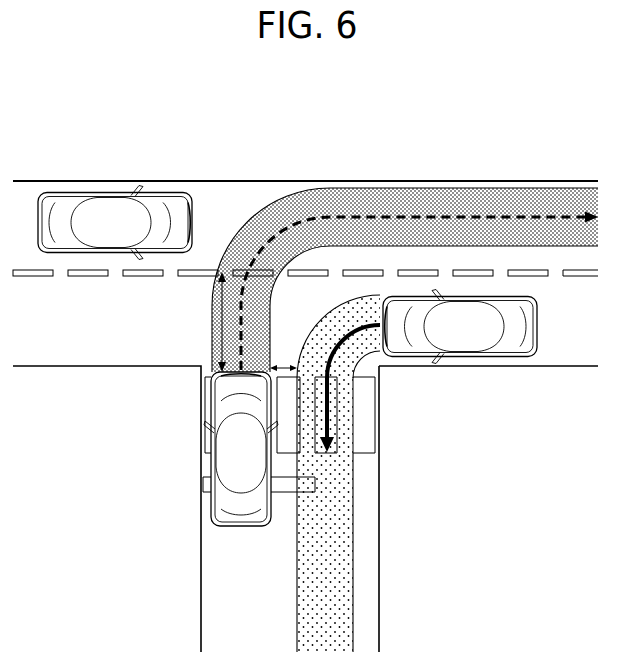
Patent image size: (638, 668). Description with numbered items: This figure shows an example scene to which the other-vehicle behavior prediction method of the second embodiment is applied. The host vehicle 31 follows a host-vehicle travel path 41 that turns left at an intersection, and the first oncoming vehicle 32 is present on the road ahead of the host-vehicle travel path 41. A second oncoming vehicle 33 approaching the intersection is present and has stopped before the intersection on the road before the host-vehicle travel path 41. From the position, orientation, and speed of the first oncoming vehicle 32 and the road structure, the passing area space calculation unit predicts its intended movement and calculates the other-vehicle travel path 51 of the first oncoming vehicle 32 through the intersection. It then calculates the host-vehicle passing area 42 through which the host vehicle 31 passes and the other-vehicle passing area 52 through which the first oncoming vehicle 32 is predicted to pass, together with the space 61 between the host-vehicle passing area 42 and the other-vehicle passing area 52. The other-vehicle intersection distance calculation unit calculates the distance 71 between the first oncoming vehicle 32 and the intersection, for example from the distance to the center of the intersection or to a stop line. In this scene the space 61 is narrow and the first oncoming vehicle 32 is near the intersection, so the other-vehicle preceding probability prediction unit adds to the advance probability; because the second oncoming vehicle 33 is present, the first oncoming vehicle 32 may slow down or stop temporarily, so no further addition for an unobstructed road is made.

The host vehicle 31 is at (537, 324).
The first oncoming vehicle 32 is at (213, 470).
The second oncoming vehicle 33 is at (95, 215).
The host-vehicle travel path 41 is at (329, 410).
The host-vehicle passing area 42 is at (347, 515).
The other-vehicle travel path 51 is at (373, 186).
The other-vehicle passing area 52 is at (506, 196).
The space 61 is at (284, 361).
The distance 71 is at (212, 318).